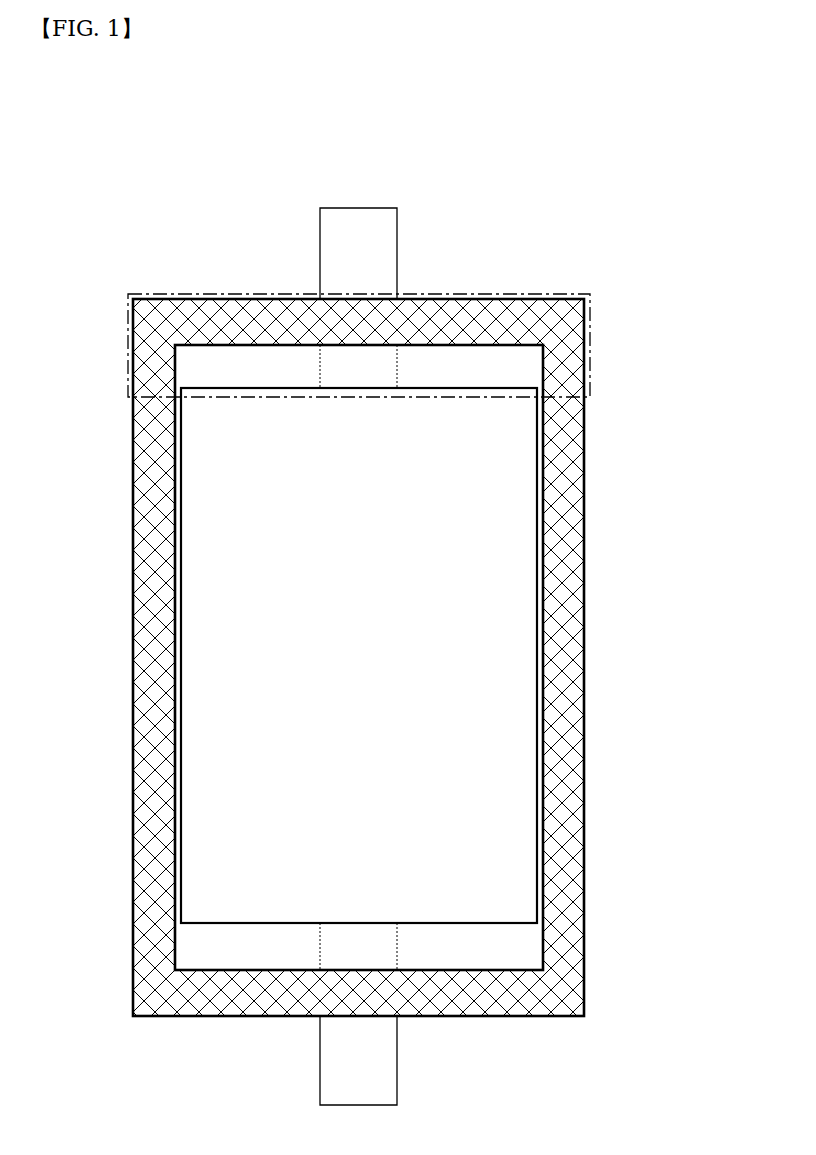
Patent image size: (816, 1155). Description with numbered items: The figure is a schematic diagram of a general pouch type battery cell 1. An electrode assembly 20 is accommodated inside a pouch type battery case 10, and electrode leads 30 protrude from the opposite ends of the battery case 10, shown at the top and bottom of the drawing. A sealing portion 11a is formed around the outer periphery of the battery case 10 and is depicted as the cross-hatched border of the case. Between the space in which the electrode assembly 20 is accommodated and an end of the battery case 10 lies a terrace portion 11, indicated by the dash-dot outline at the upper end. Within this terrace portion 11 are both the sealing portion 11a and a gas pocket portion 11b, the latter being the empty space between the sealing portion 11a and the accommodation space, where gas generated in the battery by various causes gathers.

The battery cell 1 is at (116, 126).
The battery case 10 is at (583, 690).
The terrace portion 11 is at (128, 353).
The sealing portion 11a is at (555, 327).
The gas pocket portion 11b is at (530, 362).
The electrode assembly 20 is at (510, 840).
The electrode leads 30 is at (397, 239).